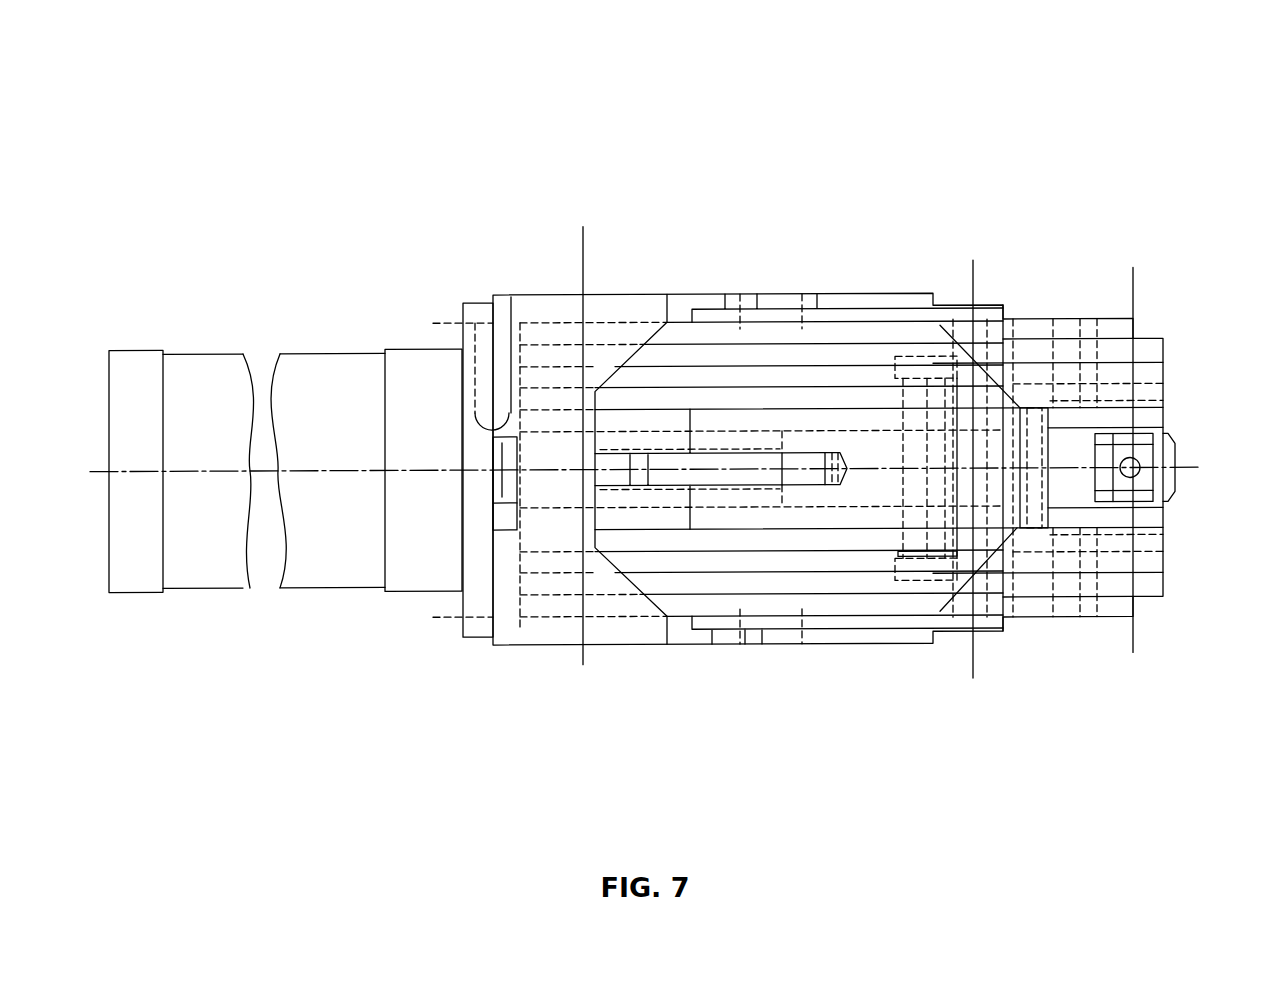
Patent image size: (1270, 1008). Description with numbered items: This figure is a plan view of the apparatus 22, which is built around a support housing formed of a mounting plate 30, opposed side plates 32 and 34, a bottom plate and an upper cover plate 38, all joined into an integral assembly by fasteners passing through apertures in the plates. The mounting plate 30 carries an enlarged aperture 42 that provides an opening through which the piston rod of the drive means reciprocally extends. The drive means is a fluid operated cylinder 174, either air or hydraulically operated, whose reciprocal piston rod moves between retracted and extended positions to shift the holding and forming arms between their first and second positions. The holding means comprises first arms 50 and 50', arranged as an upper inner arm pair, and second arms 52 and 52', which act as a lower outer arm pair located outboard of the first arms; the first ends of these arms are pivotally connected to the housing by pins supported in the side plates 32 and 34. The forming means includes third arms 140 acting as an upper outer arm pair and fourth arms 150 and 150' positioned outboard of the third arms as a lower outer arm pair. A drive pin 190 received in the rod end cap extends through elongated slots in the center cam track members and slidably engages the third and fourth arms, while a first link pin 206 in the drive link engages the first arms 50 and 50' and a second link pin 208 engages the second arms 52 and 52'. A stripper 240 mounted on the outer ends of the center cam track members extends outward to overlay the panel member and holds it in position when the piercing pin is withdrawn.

The apparatus 22 is at (708, 112).
The mounting plate 30 is at (506, 315).
The side plate 32 is at (815, 638).
The side plate 34 is at (863, 307).
The upper cover plate 38 is at (651, 327).
The enlarged aperture 42 is at (473, 327).
The first arm 50 is at (1189, 509).
The first arm 50' is at (1180, 419).
The second arm 52 is at (1130, 522).
The second arm 52' is at (1134, 331).
The third arm 140 is at (1108, 352).
The fourth arm 150 is at (1082, 623).
The fourth arm 150' is at (1059, 297).
The fluid operated cylinder 174 is at (802, 462).
The drive pin 190 is at (1003, 600).
The first link pin 206 is at (947, 510).
The second link pin 208 is at (910, 556).
The stripper 240 is at (1150, 410).